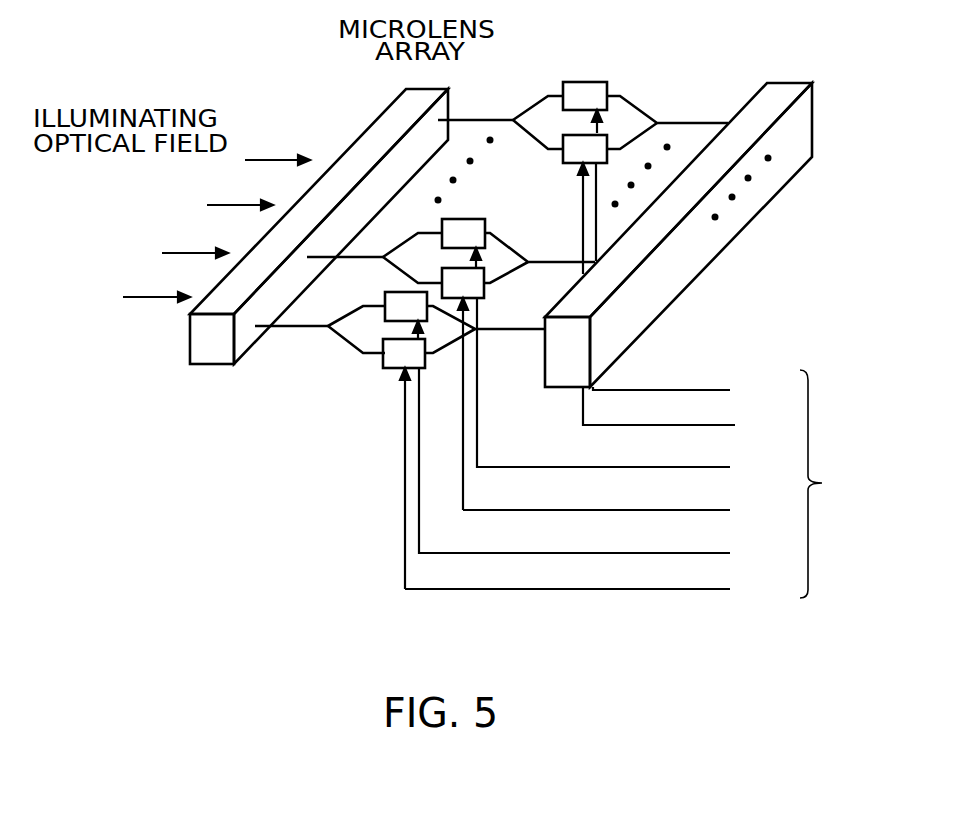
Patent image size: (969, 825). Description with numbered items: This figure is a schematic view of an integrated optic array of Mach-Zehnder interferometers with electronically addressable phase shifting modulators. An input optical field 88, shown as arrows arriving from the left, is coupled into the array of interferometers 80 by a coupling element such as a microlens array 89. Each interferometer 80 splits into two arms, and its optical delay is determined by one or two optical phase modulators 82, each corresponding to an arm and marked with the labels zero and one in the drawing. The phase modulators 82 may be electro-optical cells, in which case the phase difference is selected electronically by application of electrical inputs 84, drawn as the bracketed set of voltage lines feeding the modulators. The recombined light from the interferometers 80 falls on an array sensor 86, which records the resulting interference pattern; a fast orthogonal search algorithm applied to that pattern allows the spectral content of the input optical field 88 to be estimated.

The interferometer 80 is at (498, 118).
The optical phase modulators 82 is at (583, 82).
The electrical inputs 84 is at (628, 388).
The array sensor 86 is at (775, 182).
The input optical field 88 is at (345, 113).
The microlens array 89 is at (193, 355).